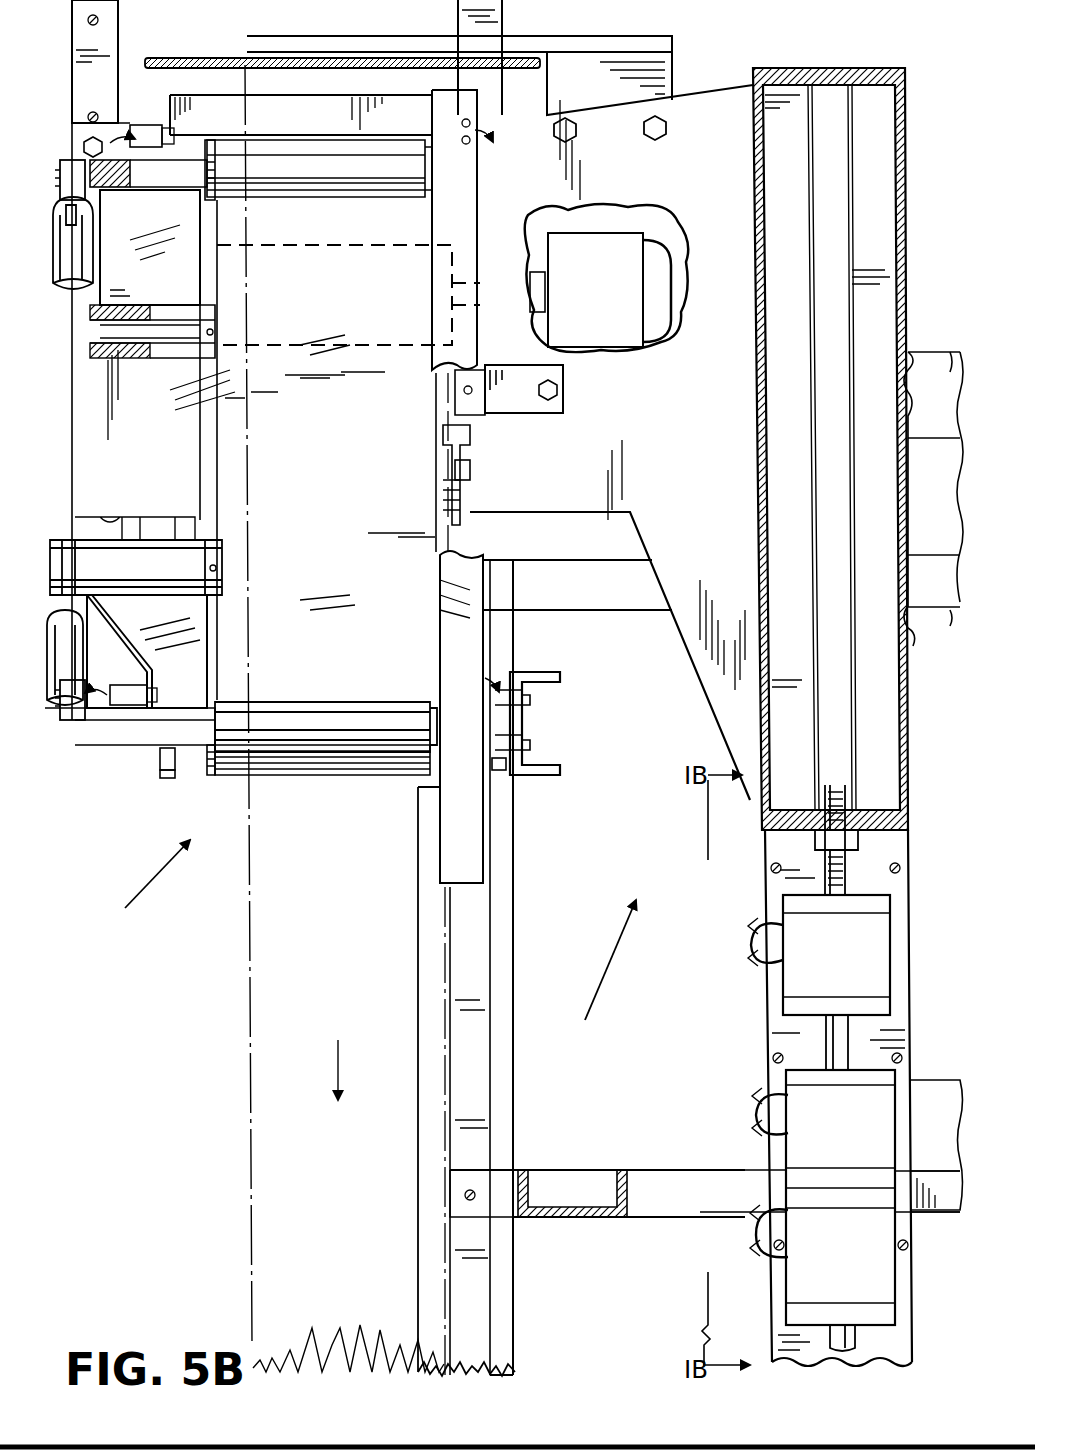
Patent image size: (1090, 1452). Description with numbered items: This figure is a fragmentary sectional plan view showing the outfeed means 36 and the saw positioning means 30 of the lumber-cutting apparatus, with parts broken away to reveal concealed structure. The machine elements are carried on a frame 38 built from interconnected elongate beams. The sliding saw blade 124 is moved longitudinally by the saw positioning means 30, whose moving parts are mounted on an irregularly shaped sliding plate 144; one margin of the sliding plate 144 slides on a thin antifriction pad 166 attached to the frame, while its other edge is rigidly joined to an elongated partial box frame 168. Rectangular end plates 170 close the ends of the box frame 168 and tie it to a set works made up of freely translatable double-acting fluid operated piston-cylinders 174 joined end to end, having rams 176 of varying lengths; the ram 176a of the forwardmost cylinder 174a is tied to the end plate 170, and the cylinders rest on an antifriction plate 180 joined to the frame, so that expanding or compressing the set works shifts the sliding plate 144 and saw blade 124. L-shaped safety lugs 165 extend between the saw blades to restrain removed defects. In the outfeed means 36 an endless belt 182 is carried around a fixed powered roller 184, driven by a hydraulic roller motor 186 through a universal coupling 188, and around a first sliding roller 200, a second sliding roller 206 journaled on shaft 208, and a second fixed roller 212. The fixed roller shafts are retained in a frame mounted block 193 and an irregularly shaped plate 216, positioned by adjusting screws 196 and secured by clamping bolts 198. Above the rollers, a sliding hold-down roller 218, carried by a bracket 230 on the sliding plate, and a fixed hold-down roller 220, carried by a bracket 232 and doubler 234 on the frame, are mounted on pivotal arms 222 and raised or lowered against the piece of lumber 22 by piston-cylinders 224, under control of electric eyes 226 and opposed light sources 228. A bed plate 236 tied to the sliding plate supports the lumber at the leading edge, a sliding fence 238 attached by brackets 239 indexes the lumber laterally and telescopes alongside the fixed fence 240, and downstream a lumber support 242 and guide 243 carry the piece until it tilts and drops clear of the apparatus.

The antifriction pad 166 is at (110, 18).
The L-shaped safety lugs 165 is at (299, 44).
The saw blade 124 is at (205, 60).
The frame 38 is at (497, 20).
The electric eyes 226 is at (147, 127).
The bed plate 236 is at (316, 124).
The light sources 228 is at (492, 146).
The sliding fence 238 is at (462, 184).
The fixed powered roller 184 is at (452, 245).
The hydraulic roller motor 186 is at (580, 255).
The universal coupling 188 is at (530, 288).
The partial box frame 168 is at (905, 180).
The first sliding roller 200 is at (203, 210).
The sliding hold-down roller 218 is at (290, 196).
The pivotal arms 222 is at (170, 270).
The double-acting fluid operated piston-cylinders 224 is at (72, 276).
The bracket 230 is at (82, 330).
The second sliding roller 206 is at (462, 440).
The shaft 208 is at (470, 470).
The brackets 239 is at (550, 415).
The sliding plate 144 is at (658, 504).
The doubler 234 is at (56, 552).
The bracket 232 is at (96, 604).
The fixed hold-down roller 220 is at (322, 716).
The frame mounted block 193 is at (505, 722).
The clamping bolts 198 is at (162, 762).
The irregularly shaped plate 216 is at (163, 780).
The second fixed roller 212 is at (212, 776).
The endless belt 182 is at (328, 770).
The adjusting screws 196 is at (502, 770).
The outfeed means 36 is at (141, 885).
The saw positioning means 30 is at (602, 973).
The piece of lumber 22 is at (246, 1026).
The fixed fence 240 is at (470, 1073).
The lumber support 242 is at (420, 1110).
The guide 243 is at (475, 1342).
The rectangular end plates 170 is at (898, 832).
The ram of the forwardmost cylinder 176a is at (846, 878).
The forwardmost cylinder 174a is at (868, 955).
The rams 176 is at (830, 1028).
The antifriction plate 180 is at (786, 1072).
The double-acting fluid operated piston-cylinders 174 is at (887, 1198).